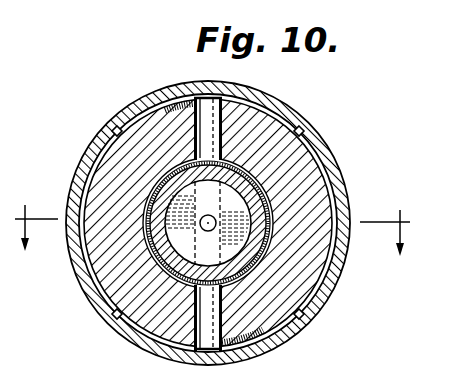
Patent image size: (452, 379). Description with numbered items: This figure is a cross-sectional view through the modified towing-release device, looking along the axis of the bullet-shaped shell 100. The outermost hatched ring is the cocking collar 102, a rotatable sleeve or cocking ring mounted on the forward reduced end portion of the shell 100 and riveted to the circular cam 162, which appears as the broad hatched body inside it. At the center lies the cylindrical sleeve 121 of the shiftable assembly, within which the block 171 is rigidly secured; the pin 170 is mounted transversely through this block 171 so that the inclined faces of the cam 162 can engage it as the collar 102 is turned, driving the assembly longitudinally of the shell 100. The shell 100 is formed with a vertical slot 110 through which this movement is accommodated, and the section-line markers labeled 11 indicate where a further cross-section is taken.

The shell 100 is at (117, 290).
The cocking collar 102 is at (276, 104).
The vertical slot 110 is at (193, 131).
The cylindrical sleeve 121 is at (270, 203).
The circular cam 162 is at (318, 166).
The pin 170 is at (139, 97).
The block 171 is at (150, 193).
The section line 11- 11 is at (211, 242).